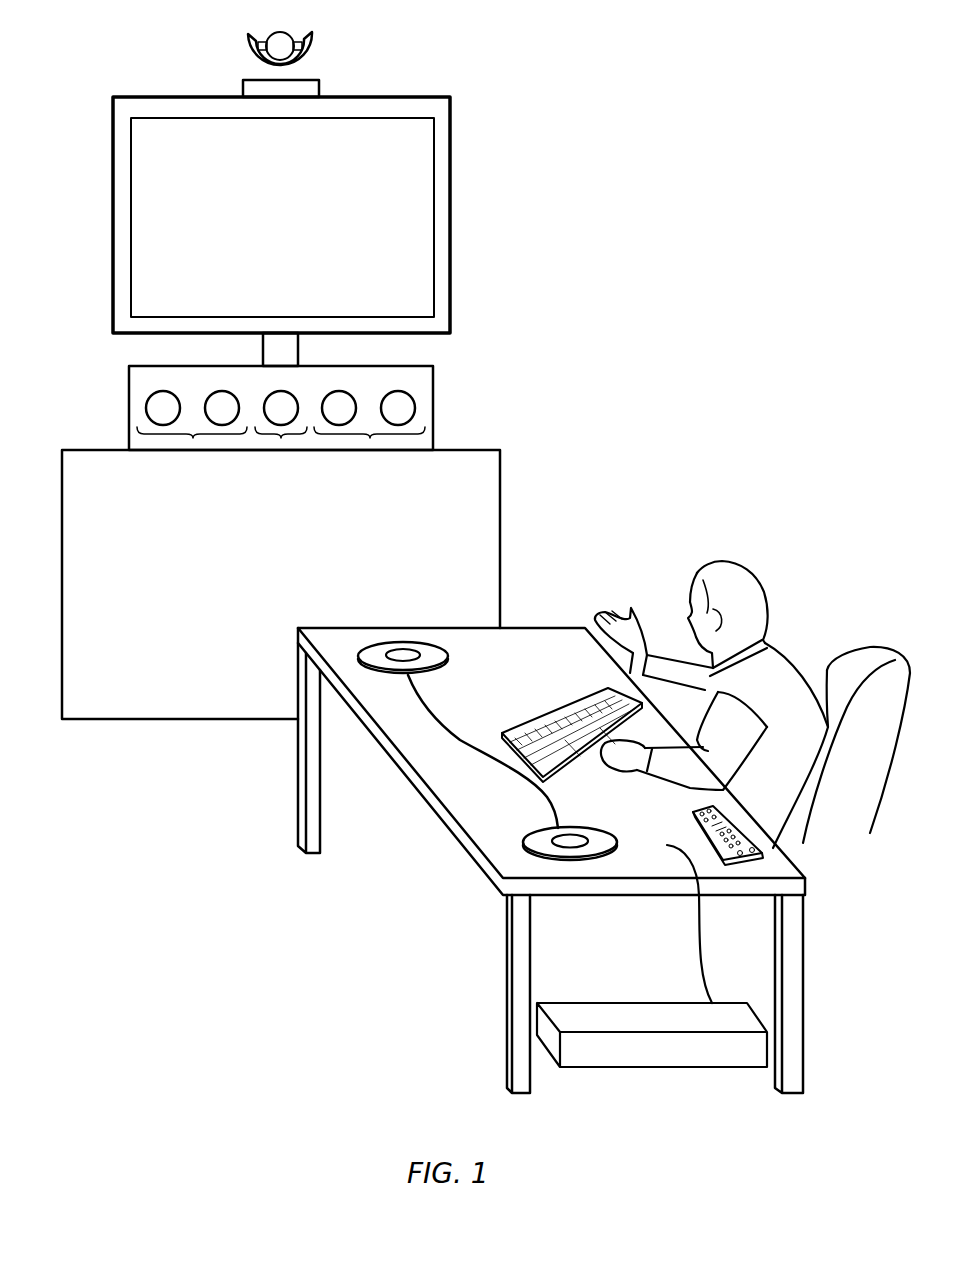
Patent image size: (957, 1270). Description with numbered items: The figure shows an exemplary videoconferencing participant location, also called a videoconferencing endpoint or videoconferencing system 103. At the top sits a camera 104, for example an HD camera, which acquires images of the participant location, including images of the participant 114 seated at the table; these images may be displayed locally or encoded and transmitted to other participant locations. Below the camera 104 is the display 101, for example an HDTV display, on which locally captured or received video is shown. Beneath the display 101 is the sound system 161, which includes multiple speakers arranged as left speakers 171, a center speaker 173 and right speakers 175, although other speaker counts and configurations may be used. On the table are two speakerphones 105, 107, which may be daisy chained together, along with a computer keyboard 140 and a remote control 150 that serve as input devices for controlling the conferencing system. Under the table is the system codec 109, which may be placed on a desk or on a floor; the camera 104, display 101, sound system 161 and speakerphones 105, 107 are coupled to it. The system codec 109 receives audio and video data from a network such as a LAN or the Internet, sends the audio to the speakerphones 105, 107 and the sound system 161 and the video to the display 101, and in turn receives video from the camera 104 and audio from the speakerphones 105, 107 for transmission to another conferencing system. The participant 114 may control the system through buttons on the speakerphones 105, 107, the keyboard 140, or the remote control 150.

The display 101 is at (402, 164).
The videoconferencing system 103 is at (570, 100).
The camera 104 is at (313, 43).
The speakerphone 105 is at (542, 828).
The speakerphone 107 is at (447, 654).
The system codec 109 is at (678, 1067).
The participant 114 is at (750, 573).
The computer keyboard 140 is at (562, 707).
The remote control 150 is at (690, 810).
The sound system 161 is at (433, 382).
The left speakers 171 is at (193, 438).
The center speaker 173 is at (281, 438).
The right speakers 175 is at (370, 438).